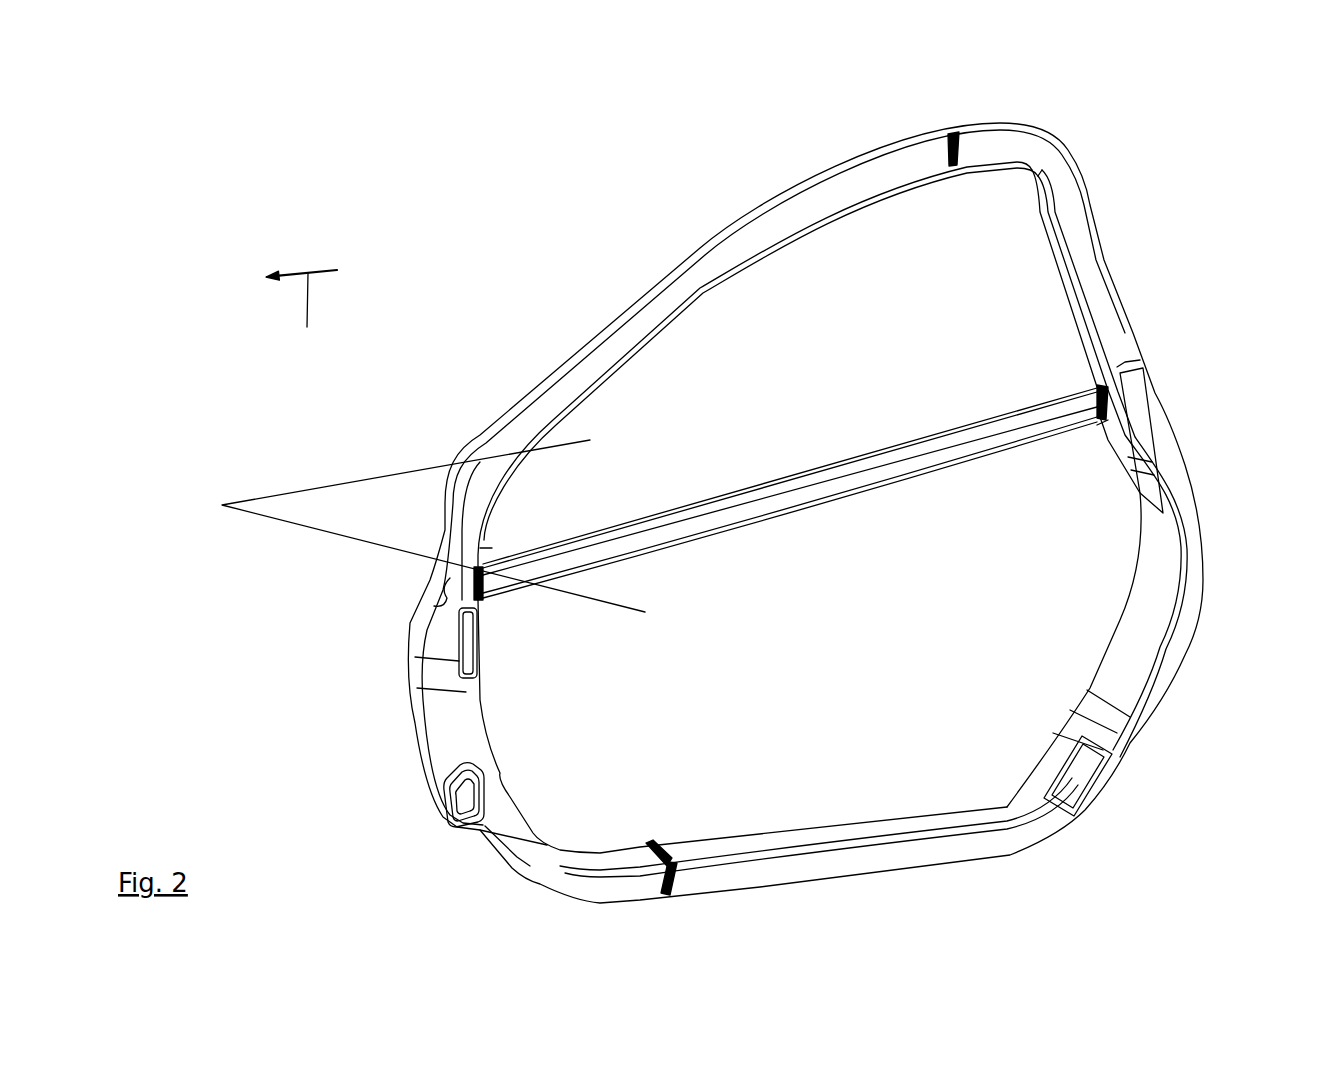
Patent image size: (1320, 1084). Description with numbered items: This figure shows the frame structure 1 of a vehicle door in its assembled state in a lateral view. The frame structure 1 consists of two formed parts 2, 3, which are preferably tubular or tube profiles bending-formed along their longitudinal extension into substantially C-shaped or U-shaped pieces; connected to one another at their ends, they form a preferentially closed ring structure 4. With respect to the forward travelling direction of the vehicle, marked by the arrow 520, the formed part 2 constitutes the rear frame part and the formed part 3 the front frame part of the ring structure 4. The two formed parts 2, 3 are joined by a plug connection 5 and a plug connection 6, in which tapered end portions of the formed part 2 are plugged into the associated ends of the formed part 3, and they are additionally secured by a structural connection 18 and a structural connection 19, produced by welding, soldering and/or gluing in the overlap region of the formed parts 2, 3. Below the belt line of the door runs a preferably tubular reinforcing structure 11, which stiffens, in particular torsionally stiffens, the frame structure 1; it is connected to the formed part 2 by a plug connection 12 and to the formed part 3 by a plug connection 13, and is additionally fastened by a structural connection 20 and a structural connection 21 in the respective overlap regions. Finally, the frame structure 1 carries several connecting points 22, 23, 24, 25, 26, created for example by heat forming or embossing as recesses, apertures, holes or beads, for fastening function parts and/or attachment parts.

The frame structure 1 is at (1112, 173).
The formed part 2 is at (1114, 293).
The formed part 3 is at (580, 360).
The ring structure 4 is at (424, 526).
The plug connection 5 is at (934, 190).
The plug connection 6 is at (691, 858).
The reinforcing structure 11 is at (780, 494).
The plug connection 12 is at (1088, 434).
The plug connection 13 is at (496, 540).
The structural connection 18 is at (954, 134).
The structural connection 19 is at (668, 892).
The structural connection 20 is at (1107, 405).
The structural connection 21 is at (484, 592).
The connecting point 22 is at (468, 662).
The connecting point 23 is at (1143, 497).
The connecting point 24 is at (463, 802).
The connecting point 25 is at (1080, 782).
The connecting point 26 is at (518, 875).
The arrow 520 is at (301, 318).